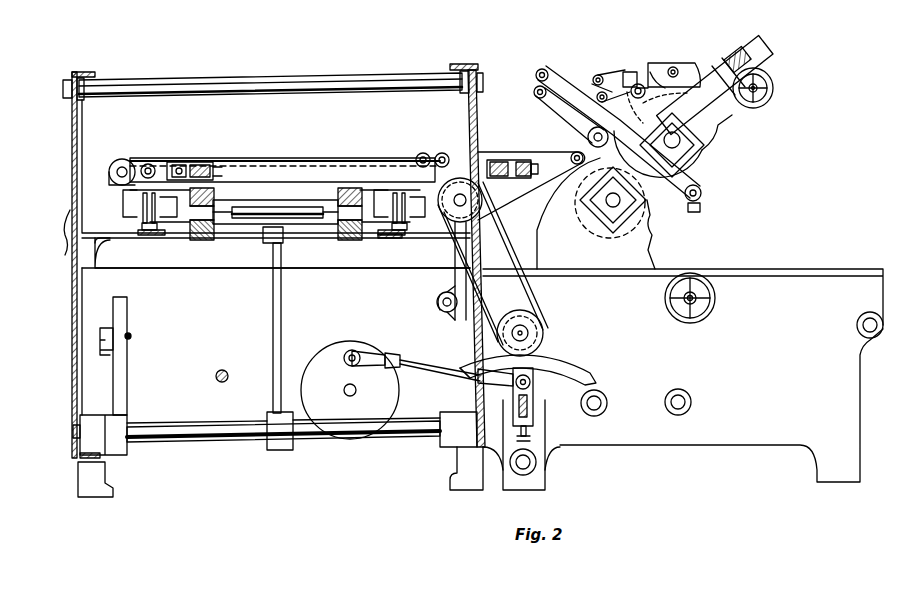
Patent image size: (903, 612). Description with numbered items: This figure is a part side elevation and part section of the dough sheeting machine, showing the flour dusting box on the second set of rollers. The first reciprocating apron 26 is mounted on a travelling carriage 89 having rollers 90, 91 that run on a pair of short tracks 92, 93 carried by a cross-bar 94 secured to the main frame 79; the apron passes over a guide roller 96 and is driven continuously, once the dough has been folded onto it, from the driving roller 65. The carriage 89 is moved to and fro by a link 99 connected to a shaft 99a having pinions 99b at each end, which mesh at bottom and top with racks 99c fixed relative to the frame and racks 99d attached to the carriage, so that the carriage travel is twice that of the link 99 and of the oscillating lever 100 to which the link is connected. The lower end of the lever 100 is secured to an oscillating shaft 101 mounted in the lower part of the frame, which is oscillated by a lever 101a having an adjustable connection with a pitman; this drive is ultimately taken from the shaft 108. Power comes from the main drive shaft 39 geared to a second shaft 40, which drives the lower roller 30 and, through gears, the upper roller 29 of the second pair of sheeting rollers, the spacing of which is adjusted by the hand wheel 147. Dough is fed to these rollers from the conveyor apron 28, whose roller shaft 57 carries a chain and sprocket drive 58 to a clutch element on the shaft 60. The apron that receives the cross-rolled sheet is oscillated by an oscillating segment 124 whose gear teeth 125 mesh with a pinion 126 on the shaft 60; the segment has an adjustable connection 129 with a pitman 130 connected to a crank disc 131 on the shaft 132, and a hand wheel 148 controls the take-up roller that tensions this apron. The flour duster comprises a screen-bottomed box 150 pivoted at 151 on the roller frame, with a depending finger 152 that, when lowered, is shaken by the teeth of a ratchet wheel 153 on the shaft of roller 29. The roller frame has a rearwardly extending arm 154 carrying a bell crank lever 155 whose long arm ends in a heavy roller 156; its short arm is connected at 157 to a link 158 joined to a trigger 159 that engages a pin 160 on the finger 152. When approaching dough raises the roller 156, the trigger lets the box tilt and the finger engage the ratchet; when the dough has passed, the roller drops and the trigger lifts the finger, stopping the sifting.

The first reciprocating apron 26 is at (200, 160).
The conveyor apron 28 is at (508, 148).
The upper roller 29 is at (710, 165).
The lower roller 30 is at (655, 215).
The main drive shaft 39 is at (682, 390).
The second shaft 40 is at (603, 392).
The shaft 57 is at (459, 178).
The chain and sprocket drive 58 is at (512, 255).
The shaft 60 is at (522, 331).
The driving roller 65 is at (120, 170).
The main frame 79 is at (76, 240).
The travelling carriage 89 is at (310, 175).
The roller 90 is at (142, 222).
The roller 91 is at (408, 218).
The track 92 is at (135, 248).
The track 93 is at (395, 244).
The cross-bar 94 is at (122, 258).
The guide roller 96 is at (426, 153).
The link 99 is at (240, 233).
The shaft 99a is at (255, 218).
The pinion 99b is at (150, 235).
The rack 99c is at (205, 242).
The rack 99d is at (215, 188).
The oscillating lever 100 is at (272, 316).
The oscillating shaft 101 is at (240, 440).
The lever 101a is at (130, 385).
The shaft 108 is at (228, 383).
The oscillating segment 124 is at (565, 358).
The gear teeth 125 is at (580, 362).
The pinion 126 is at (542, 331).
The adjustable connection 129 is at (533, 395).
The pitman 130 is at (412, 368).
The crank disc 131 is at (330, 365).
The shaft 132 is at (356, 390).
The hand wheel 147 is at (774, 80).
The hand wheel 148 is at (708, 314).
The box 150 is at (665, 62).
The pivot 151 is at (676, 66).
The depending finger 152 is at (622, 85).
The ratchet wheel 153 is at (716, 148).
The rearwardly extending arm 154 is at (560, 70).
The bell crank lever 155 is at (578, 118).
The roller 156 is at (588, 137).
The connection 157 is at (534, 92).
The link 158 is at (602, 74).
The trigger 159 is at (605, 74).
The pin 160 is at (634, 70).